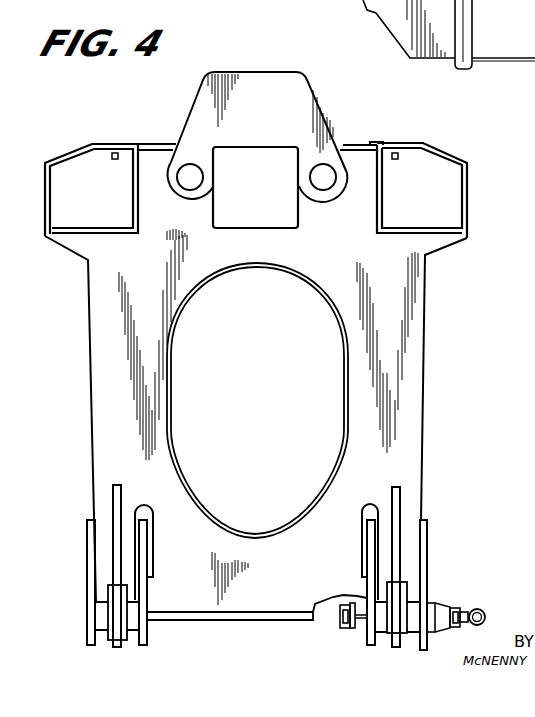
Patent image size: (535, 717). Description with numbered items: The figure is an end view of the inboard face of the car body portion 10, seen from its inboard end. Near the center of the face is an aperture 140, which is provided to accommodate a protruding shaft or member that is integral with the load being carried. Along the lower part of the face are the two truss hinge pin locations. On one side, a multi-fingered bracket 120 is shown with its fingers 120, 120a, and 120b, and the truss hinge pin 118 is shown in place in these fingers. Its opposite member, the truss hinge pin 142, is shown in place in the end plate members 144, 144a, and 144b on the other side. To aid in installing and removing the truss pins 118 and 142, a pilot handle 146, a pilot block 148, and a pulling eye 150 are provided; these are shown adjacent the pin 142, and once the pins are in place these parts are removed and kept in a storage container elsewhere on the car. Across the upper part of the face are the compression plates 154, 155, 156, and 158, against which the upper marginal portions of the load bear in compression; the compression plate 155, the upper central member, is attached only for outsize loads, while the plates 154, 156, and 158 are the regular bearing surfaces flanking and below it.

The car body portion 10 is at (424, 323).
The truss hinge pin 118 is at (102, 632).
The bracket 120 is at (88, 562).
The finger 120a is at (113, 498).
The finger 120b is at (147, 590).
The aperture 140 is at (202, 292).
The truss hinge pin 142 is at (410, 607).
The end plate member 144 is at (427, 532).
The end plate member 144a is at (400, 498).
The end plate member 144b is at (367, 586).
The pilot handle 146 is at (345, 629).
The pilot block 148 is at (440, 633).
The pulling eye 150 is at (477, 608).
The compression plate 154 is at (427, 153).
The compression plate 155 is at (270, 83).
The compression plate 156 is at (83, 163).
The compression plate 158 is at (290, 210).